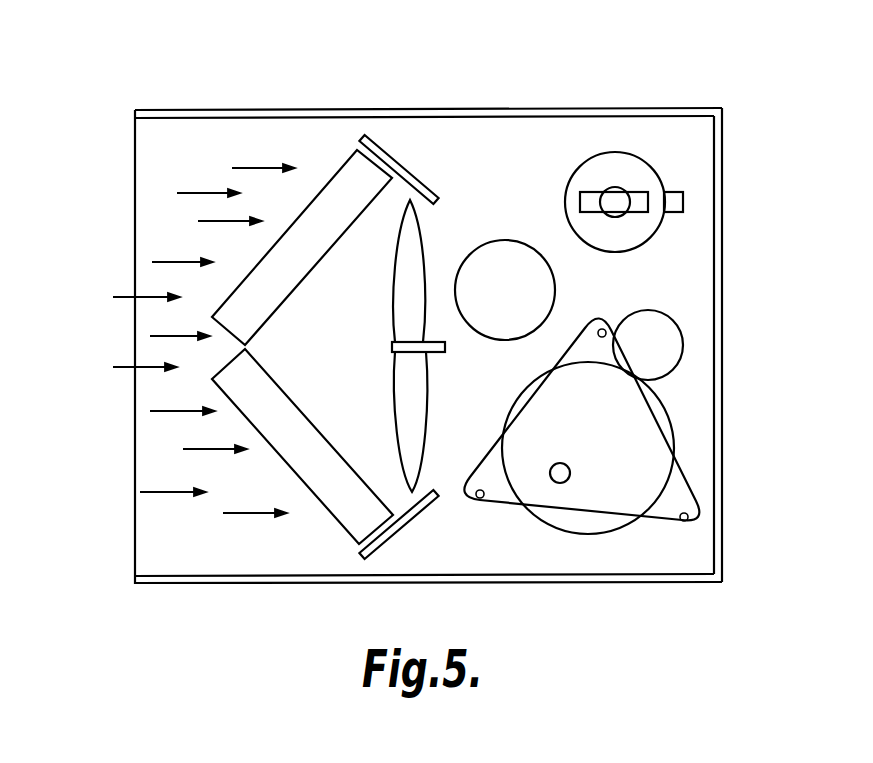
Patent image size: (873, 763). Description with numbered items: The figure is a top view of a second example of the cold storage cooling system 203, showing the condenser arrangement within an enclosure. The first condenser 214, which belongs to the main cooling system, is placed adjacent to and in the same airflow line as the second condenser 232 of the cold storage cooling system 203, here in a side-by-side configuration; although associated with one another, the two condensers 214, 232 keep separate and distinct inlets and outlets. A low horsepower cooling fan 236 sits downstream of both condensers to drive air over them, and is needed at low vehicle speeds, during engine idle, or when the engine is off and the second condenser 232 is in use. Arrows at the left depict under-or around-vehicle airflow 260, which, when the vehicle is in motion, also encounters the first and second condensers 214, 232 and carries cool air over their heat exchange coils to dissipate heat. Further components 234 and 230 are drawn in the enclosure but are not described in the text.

The cold storage cooling system 203 is at (619, 109).
The first condenser 214 is at (335, 185).
The second condenser 232 is at (342, 520).
The cooling fan 236 is at (422, 460).
The motor 234 is at (650, 164).
The compressor 230 is at (668, 420).
The under-or around-vehicle airflow 260 is at (143, 366).